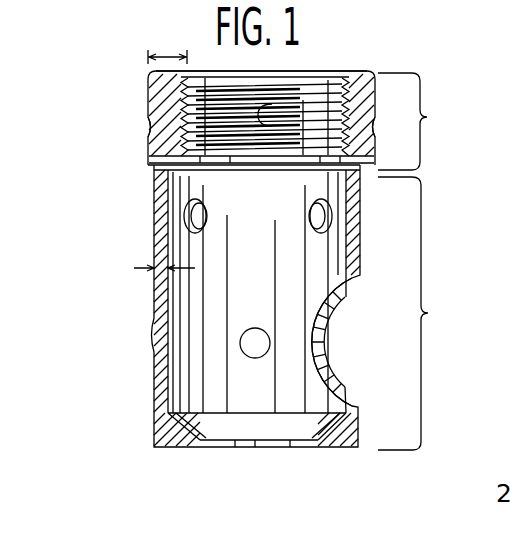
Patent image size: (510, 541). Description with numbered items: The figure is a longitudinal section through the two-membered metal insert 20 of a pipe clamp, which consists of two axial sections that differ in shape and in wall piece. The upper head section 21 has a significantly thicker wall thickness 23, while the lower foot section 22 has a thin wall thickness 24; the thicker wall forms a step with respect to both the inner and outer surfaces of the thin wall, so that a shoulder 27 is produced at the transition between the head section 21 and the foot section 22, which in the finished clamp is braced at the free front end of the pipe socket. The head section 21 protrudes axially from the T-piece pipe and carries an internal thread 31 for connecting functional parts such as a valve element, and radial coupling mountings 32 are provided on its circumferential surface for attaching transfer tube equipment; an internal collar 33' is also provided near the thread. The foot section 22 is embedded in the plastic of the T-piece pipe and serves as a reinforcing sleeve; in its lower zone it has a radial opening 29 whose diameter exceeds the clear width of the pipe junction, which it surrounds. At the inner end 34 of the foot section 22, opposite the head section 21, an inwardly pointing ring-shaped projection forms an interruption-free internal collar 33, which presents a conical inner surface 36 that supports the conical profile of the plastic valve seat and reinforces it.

The metal insert 20 is at (394, 61).
The head section 21 is at (304, 120).
The foot section 22 is at (303, 307).
The wall thickness of head section 23 is at (170, 57).
The wall thickness of foot section 24 is at (156, 264).
The shoulder 27 is at (155, 167).
The radial opening 29 is at (322, 328).
The internal thread 31 is at (160, 89).
The radial coupling mountings 32 is at (160, 131).
The internal collar 33 is at (273, 460).
The internal collar 33' is at (219, 154).
The inner end of foot section 34 is at (343, 450).
The conical inner surface 36 is at (227, 447).